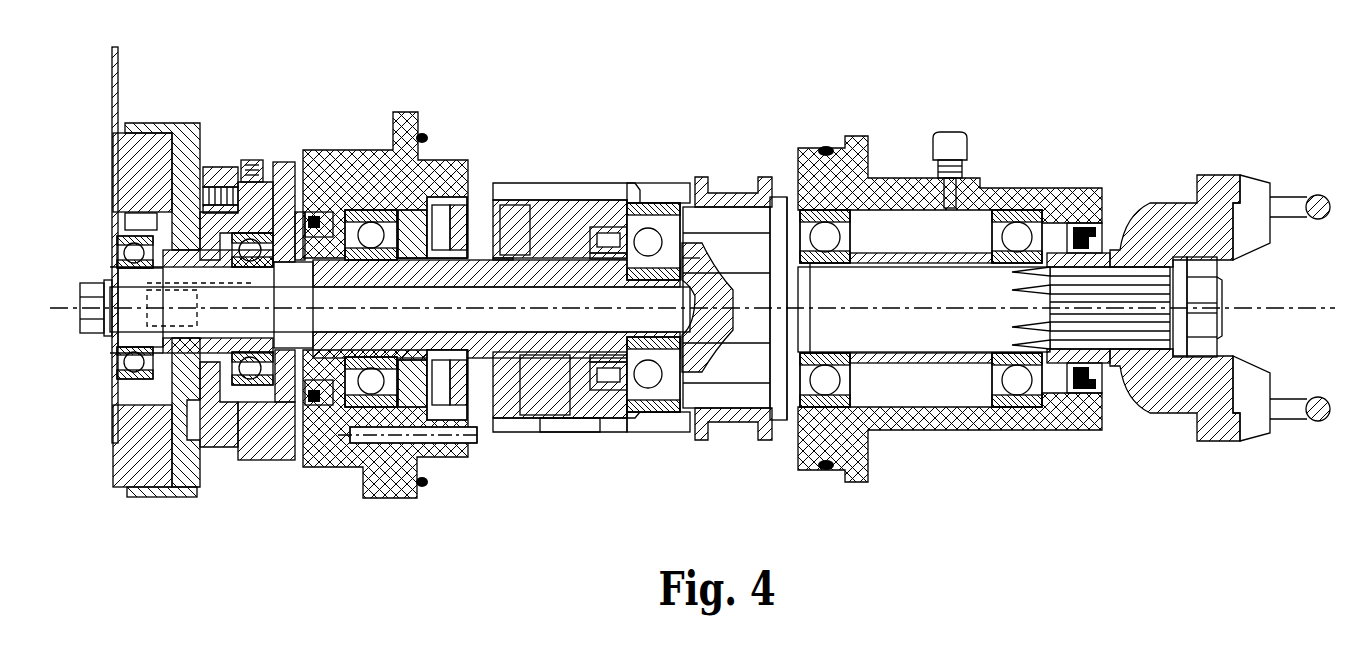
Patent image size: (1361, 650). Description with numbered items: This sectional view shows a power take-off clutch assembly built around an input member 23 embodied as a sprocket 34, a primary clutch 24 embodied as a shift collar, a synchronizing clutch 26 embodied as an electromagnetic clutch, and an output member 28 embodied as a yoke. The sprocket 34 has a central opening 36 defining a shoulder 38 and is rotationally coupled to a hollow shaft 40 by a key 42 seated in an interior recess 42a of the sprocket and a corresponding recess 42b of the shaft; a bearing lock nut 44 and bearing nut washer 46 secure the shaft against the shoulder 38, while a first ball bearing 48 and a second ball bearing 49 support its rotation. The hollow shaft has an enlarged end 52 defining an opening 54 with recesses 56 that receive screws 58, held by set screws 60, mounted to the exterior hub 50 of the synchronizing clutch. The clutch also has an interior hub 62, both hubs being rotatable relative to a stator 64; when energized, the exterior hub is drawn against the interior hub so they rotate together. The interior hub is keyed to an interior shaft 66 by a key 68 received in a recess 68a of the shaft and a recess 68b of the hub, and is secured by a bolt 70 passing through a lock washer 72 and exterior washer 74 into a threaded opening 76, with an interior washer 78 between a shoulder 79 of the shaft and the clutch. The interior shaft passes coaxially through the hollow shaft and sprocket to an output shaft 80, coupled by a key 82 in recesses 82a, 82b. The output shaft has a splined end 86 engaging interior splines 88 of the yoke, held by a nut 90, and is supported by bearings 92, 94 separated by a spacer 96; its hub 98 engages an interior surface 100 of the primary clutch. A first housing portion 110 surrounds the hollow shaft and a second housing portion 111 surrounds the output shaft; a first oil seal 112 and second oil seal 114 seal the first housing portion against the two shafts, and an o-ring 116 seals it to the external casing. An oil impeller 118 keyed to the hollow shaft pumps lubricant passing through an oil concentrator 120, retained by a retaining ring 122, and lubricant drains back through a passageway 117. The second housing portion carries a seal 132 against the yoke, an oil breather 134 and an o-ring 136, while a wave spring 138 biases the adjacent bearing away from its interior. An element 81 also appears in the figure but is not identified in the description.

The input member 23 is at (597, 452).
The primary clutch 24 is at (740, 196).
The synchronizing clutch 26 is at (140, 100).
The output member 28 is at (1256, 180).
The sprocket 34 is at (620, 192).
The central opening 36 is at (610, 392).
The shoulder 38 is at (565, 430).
The hollow shaft 40 is at (540, 402).
The key 42 is at (560, 232).
The interior recess 42a is at (512, 247).
The recess 42b is at (490, 262).
The bearing lock nut 44 is at (575, 212).
The bearing nut washer 46 is at (608, 240).
The first ball bearing 48 is at (655, 414).
The second ball bearing 49 is at (375, 445).
The exterior hub 50 is at (222, 168).
The enlarged end 52 is at (285, 164).
The opening 54 is at (240, 458).
The recesses 56 is at (258, 184).
The screws 58 is at (212, 175).
The set screws 60 is at (252, 162).
The interior hub 62 is at (163, 123).
The stator 64 is at (115, 160).
The interior shaft 66 is at (217, 336).
The key 68 is at (128, 262).
The recess 68a is at (160, 300).
The recess 68b is at (140, 226).
The bolt 70 is at (84, 332).
The lock washer 72 is at (106, 338).
The exterior washer 74 is at (125, 347).
The threaded opening 76 is at (150, 352).
The interior washer 78 is at (302, 358).
The shoulder 79 is at (282, 300).
The output shaft 80 is at (905, 285).
The seal 81 is at (302, 222).
The key 82 is at (652, 250).
The recess 82a is at (690, 262).
The recess 82b is at (692, 305).
The splined end 86 is at (1160, 245).
The interior splines 88 is at (1112, 398).
The nut 90 is at (1205, 300).
The bearing 92 is at (812, 225).
The bearing 94 is at (1010, 220).
The spacer 96 is at (930, 362).
The hub 98 is at (724, 375).
The interior surface 100 is at (730, 424).
The first housing portion 110 is at (405, 112).
The second housing portion 111 is at (990, 431).
The first oil seal 112 is at (318, 408).
The second oil seal 114 is at (300, 400).
The o-ring 116 is at (426, 136).
The passageway 117 is at (470, 440).
The oil impeller 118 is at (368, 215).
The oil concentrator 120 is at (412, 212).
The retaining ring 122 is at (455, 422).
The seal 132 is at (1120, 260).
The oil breather 134 is at (950, 132).
The o-ring 136 is at (828, 148).
The wave spring 138 is at (1082, 222).